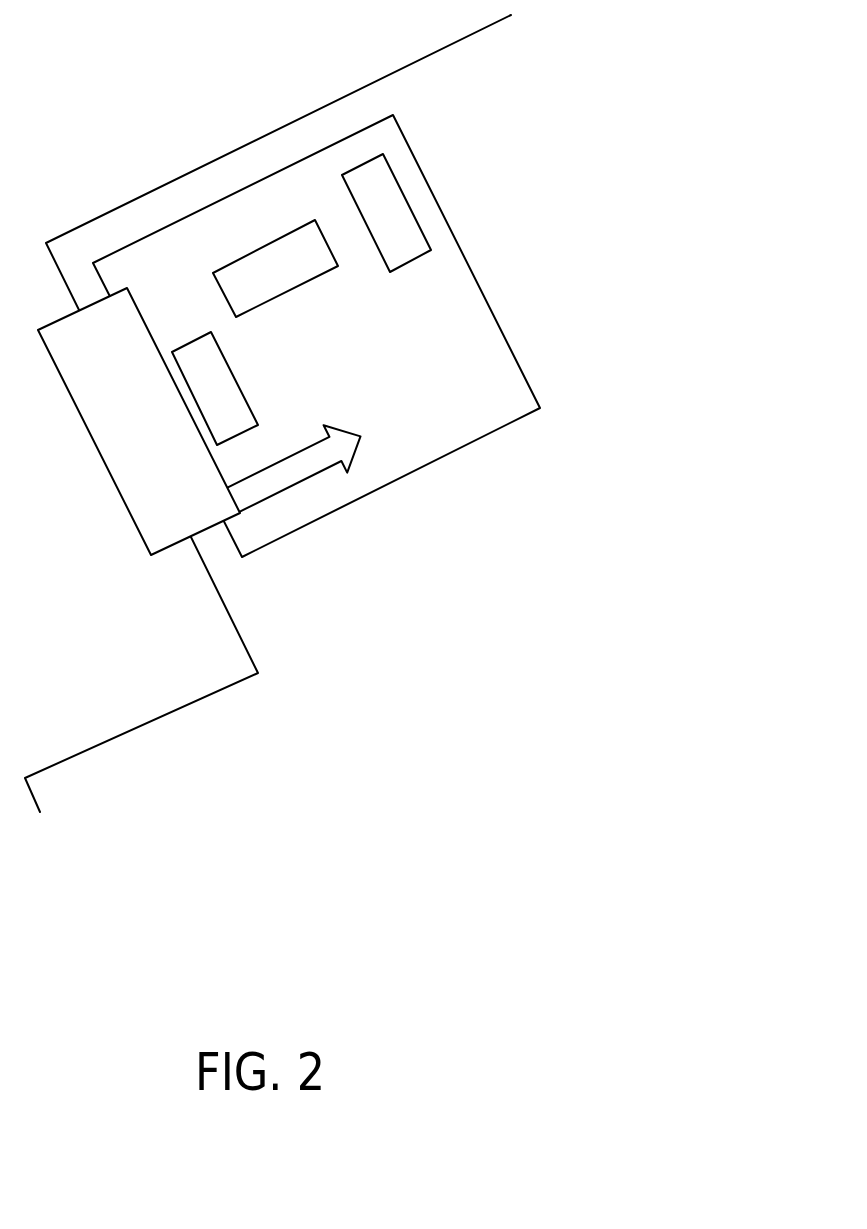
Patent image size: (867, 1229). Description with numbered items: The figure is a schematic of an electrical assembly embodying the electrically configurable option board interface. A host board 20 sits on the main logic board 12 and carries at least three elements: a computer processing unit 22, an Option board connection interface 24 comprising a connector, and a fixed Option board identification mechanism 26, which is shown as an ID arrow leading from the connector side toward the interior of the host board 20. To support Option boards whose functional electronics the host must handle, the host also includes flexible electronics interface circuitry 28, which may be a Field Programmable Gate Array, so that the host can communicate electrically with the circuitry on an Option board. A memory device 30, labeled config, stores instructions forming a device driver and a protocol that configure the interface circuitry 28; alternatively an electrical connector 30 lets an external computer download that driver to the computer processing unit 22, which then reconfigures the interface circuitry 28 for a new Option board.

The main logic board 12 is at (452, 668).
The host board 20 is at (447, 378).
The computer processing unit 22 is at (420, 227).
The Option board connection interface 24 is at (102, 461).
The Option board identification mechanism 26 is at (360, 437).
The flexible electronics interface circuitry 28 is at (240, 390).
The memory device 30 is at (229, 266).